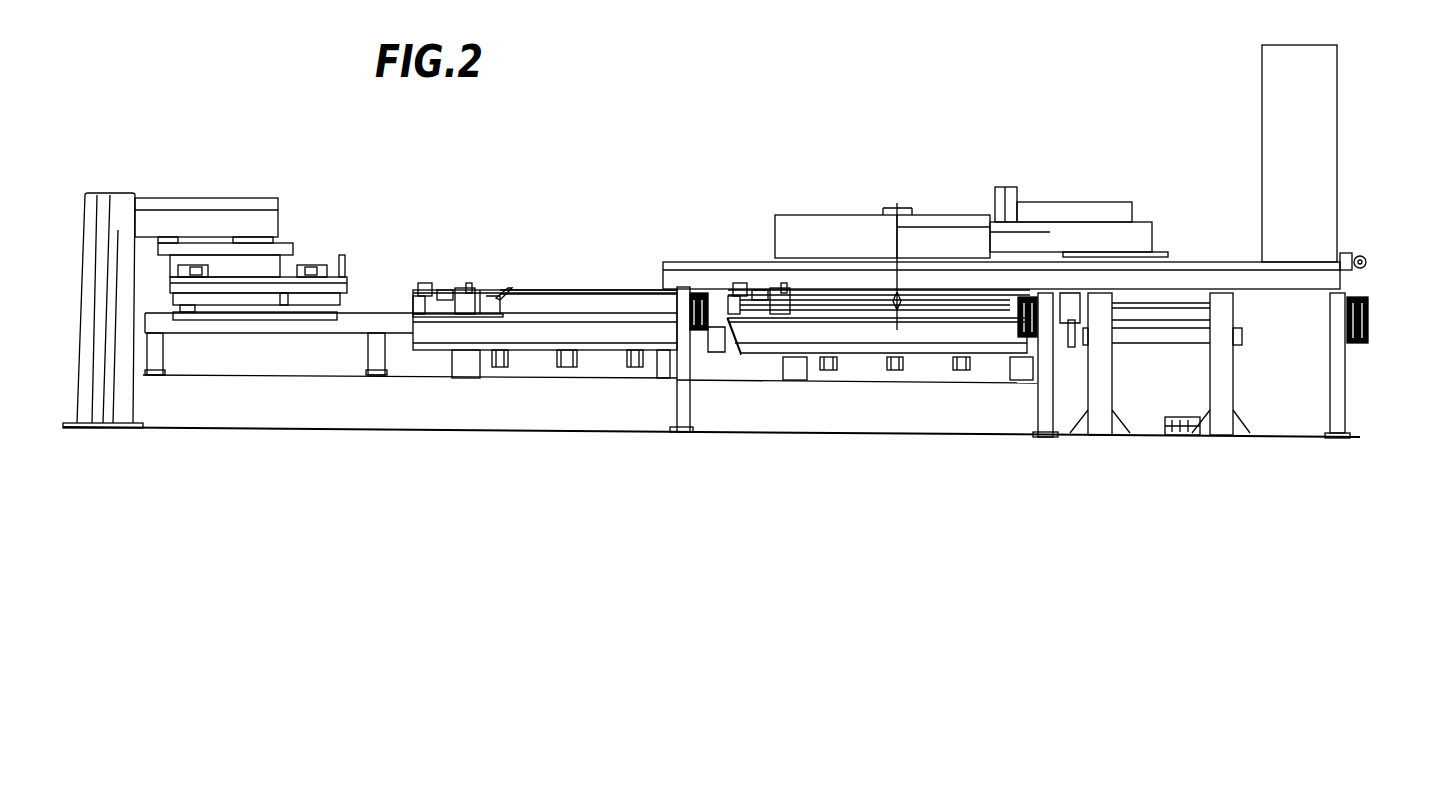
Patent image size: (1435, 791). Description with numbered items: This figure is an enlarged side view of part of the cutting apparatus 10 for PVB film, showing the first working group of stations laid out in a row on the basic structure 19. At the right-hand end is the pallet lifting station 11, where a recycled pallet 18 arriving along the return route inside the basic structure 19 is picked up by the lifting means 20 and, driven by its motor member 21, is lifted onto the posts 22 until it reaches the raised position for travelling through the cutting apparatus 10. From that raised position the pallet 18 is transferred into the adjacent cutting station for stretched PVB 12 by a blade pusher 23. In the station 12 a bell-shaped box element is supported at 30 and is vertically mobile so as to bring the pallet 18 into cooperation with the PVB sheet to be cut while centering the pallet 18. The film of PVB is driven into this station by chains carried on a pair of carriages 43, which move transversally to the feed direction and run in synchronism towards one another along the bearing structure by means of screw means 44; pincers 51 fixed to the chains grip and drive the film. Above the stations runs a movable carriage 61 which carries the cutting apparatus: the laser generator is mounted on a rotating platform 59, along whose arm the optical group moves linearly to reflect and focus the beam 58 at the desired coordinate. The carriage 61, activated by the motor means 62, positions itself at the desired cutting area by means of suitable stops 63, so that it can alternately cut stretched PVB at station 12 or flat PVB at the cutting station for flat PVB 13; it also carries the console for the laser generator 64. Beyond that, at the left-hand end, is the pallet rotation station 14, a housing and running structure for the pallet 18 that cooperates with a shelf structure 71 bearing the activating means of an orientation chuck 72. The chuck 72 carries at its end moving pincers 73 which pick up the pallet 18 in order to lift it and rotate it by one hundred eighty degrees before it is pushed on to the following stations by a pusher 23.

The cutting apparatus 10 is at (746, 98).
The pallet lifting station 11 is at (1164, 446).
The cutting station for stretched PVB 12 is at (867, 446).
The cutting station for flat PVB 13 is at (552, 436).
The pallet rotation station 14 is at (239, 433).
The pallet 18 is at (204, 300).
The basic structure 19 is at (398, 408).
The lifting means 20 is at (1155, 335).
The motor member 21 is at (1187, 437).
The posts 22 is at (1223, 385).
The blade pusher 23 is at (283, 300).
The support 30 is at (960, 378).
The carriages 43 is at (480, 303).
The screw means 44 is at (542, 290).
The pincers 51 is at (507, 288).
The beam 58 is at (903, 204).
The rotating platform 59 is at (1067, 232).
The carriage 61 is at (1202, 263).
The motor means 62 is at (1355, 258).
The stops 63 is at (697, 290).
The console for the laser generator 64 is at (1320, 90).
The shelf structure 71 is at (205, 222).
The orientation chuck 72 is at (278, 263).
The moving pincers 73 is at (352, 285).